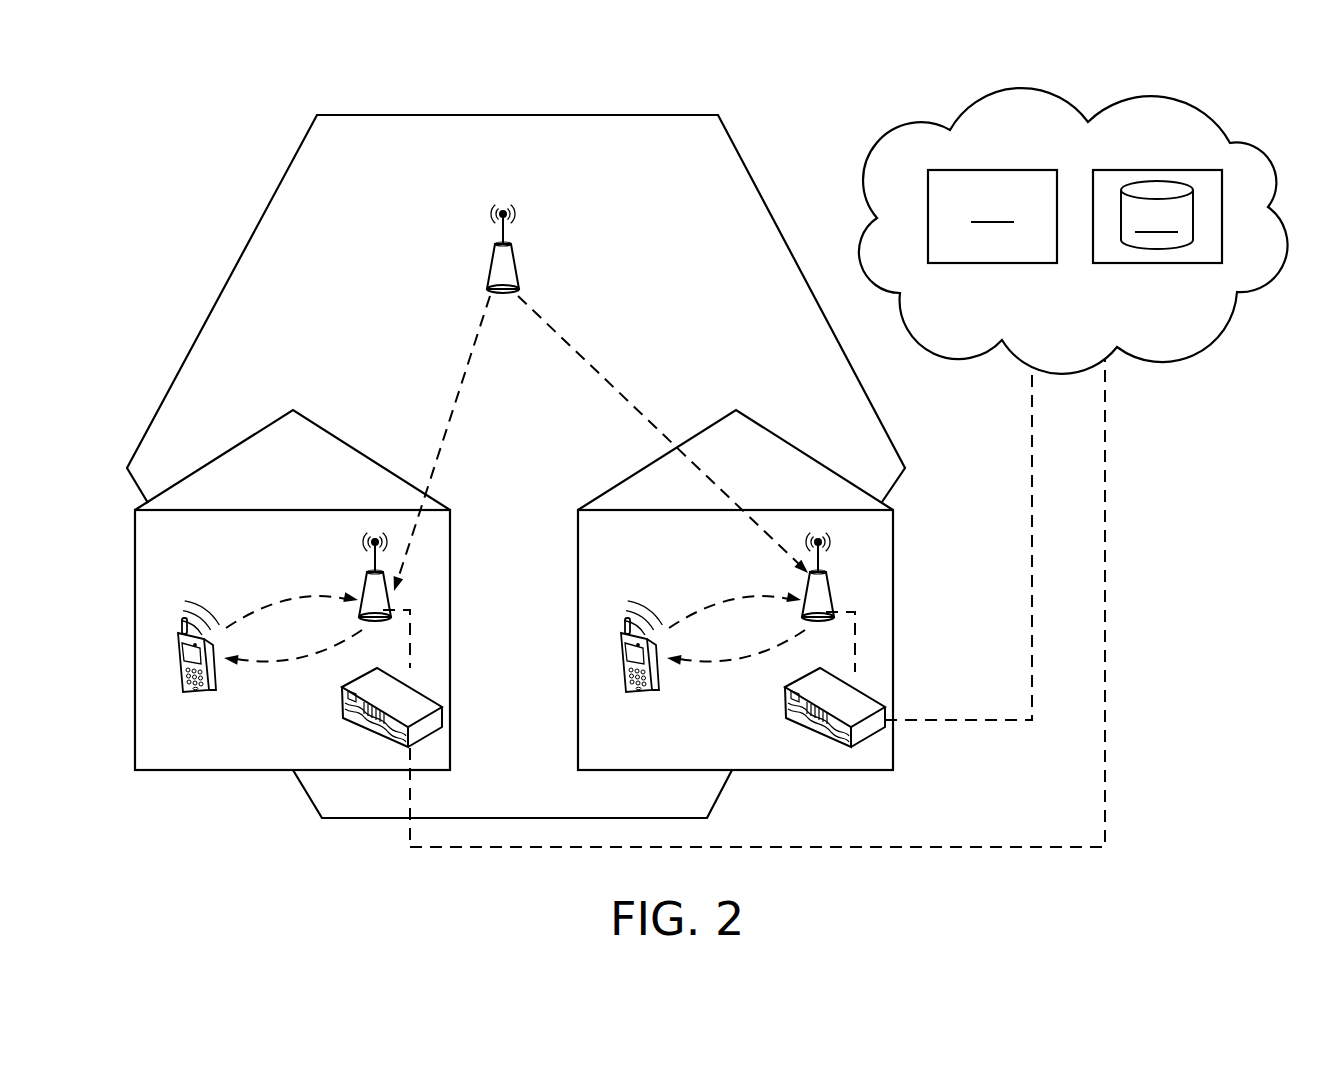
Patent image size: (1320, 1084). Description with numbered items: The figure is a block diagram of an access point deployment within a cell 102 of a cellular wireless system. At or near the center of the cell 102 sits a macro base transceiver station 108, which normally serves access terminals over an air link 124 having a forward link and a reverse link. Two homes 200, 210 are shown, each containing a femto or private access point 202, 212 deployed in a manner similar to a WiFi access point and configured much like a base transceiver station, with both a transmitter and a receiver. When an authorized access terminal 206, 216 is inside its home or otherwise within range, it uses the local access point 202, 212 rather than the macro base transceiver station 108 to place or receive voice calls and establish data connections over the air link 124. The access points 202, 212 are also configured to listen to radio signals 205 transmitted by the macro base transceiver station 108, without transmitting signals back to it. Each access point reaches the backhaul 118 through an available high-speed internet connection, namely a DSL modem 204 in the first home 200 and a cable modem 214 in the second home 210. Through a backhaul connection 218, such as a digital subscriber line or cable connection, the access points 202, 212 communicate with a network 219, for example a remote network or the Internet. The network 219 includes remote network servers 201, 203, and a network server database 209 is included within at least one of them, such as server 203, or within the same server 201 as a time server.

The cell 102 is at (268, 171).
The macro base transceiver station 108 is at (487, 272).
The backhaul 118 is at (416, 668).
The air link 124 is at (313, 598).
The home 200 is at (242, 770).
The server 201 is at (992, 216).
The access point 202 is at (368, 625).
The server 203 is at (1222, 190).
The DSL modem 204 is at (348, 718).
The radio signals 205 is at (458, 388).
The access terminal 206 is at (180, 690).
The network server database 209 is at (1157, 215).
The home 210 is at (688, 770).
The access point 212 is at (811, 625).
The cable modem 214 is at (791, 718).
The access terminal 216 is at (623, 690).
The backhaul connection 218 is at (1030, 470).
The network 219 is at (880, 153).